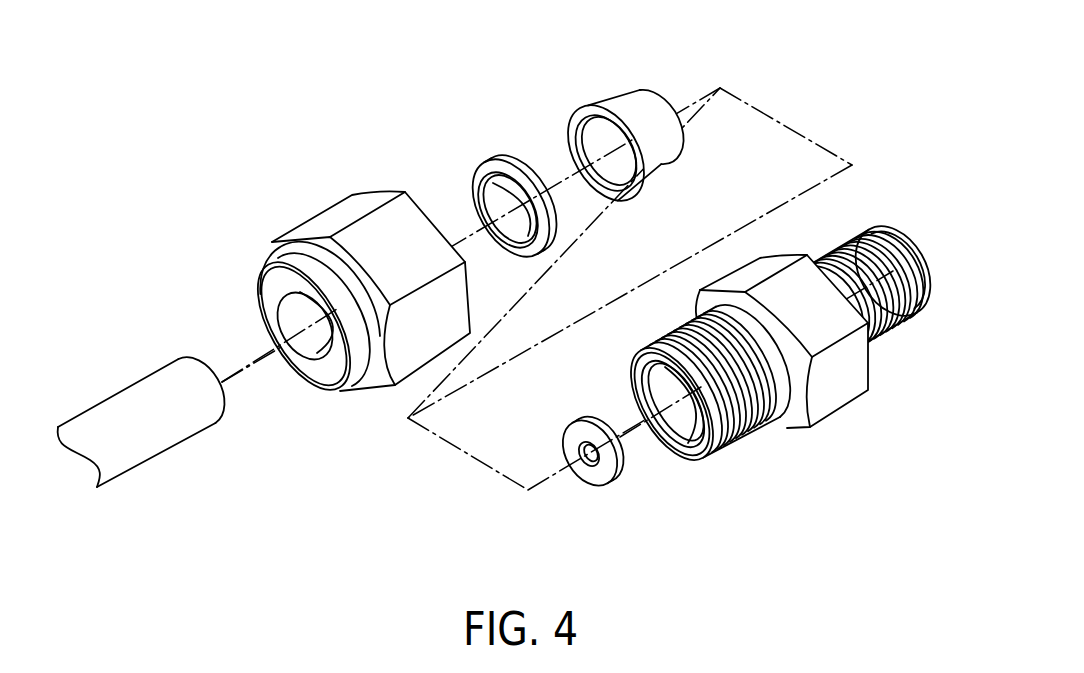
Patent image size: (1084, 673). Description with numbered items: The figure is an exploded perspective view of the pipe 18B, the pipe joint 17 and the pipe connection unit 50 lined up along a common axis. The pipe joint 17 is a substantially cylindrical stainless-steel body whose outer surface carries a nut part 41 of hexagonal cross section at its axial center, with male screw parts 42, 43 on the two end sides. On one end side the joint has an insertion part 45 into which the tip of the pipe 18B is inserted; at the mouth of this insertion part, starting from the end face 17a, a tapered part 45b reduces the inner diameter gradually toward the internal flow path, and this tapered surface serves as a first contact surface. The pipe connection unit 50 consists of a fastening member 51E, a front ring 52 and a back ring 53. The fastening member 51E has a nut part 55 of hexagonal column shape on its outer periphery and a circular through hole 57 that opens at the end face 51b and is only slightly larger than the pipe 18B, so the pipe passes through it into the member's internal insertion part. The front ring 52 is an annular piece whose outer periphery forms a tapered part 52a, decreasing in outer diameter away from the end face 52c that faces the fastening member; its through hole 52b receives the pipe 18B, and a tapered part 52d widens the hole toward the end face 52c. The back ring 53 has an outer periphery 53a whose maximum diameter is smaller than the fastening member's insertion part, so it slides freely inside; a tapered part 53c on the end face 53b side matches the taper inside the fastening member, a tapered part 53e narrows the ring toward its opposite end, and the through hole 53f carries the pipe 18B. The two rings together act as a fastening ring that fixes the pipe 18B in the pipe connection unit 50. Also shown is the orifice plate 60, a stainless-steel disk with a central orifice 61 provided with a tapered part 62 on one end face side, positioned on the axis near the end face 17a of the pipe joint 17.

The pipe connection unit 50 is at (497, 7).
The fastening member 51E is at (326, 267).
The nut part 55 is at (328, 220).
The through hole 57 is at (297, 315).
The end face 51b is at (311, 370).
The back ring 53 is at (505, 203).
The through hole 53f is at (482, 198).
The tapered part 53e is at (547, 196).
The tapered part 53c is at (515, 252).
The outer periphery 53a is at (543, 242).
The end face 53b is at (497, 249).
The front ring 52 is at (588, 132).
The tapered part 52a is at (643, 105).
The through hole 52b is at (574, 128).
The end face 52c is at (574, 149).
The tapered part 52d is at (613, 190).
The pipe 18B is at (162, 395).
The pipe joint 17 is at (771, 333).
The nut part 41 is at (840, 395).
The male screw part 42 is at (737, 423).
The male screw part 43 is at (897, 315).
The insertion part 45 is at (672, 386).
The tapered part 45b is at (676, 432).
The end face 17a is at (687, 450).
The orifice plate 60 is at (561, 453).
The orifice 61 is at (588, 475).
The tapered part 62 is at (575, 455).